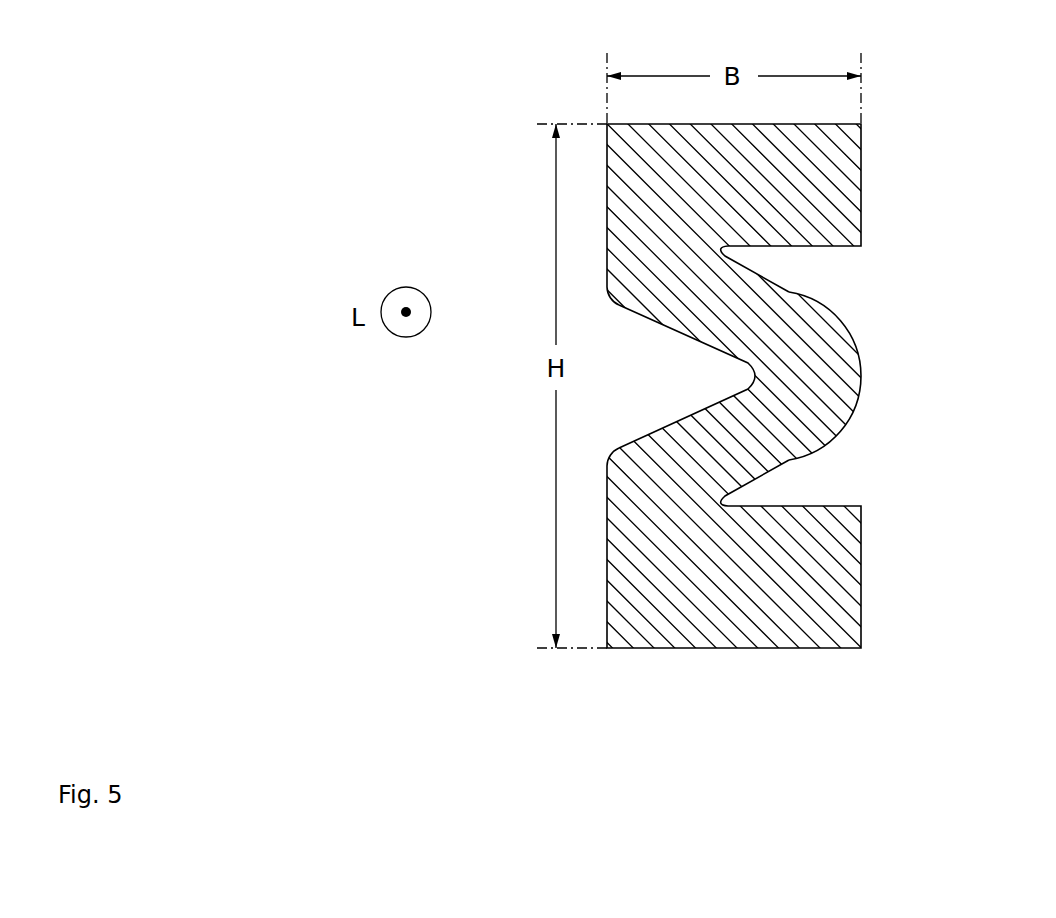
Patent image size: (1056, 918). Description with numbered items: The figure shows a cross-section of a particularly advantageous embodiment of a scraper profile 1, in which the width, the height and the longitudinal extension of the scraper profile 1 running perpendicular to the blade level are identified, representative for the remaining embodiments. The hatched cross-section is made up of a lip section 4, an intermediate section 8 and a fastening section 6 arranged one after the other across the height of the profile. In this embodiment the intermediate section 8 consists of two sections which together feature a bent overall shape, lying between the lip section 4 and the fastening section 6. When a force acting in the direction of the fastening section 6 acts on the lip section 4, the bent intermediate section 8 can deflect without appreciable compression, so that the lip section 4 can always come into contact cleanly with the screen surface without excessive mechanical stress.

The scraper profile 1 is at (350, 131).
The lip section 4 is at (852, 185).
The intermediate section 8 is at (848, 372).
The fastening section 6 is at (843, 583).